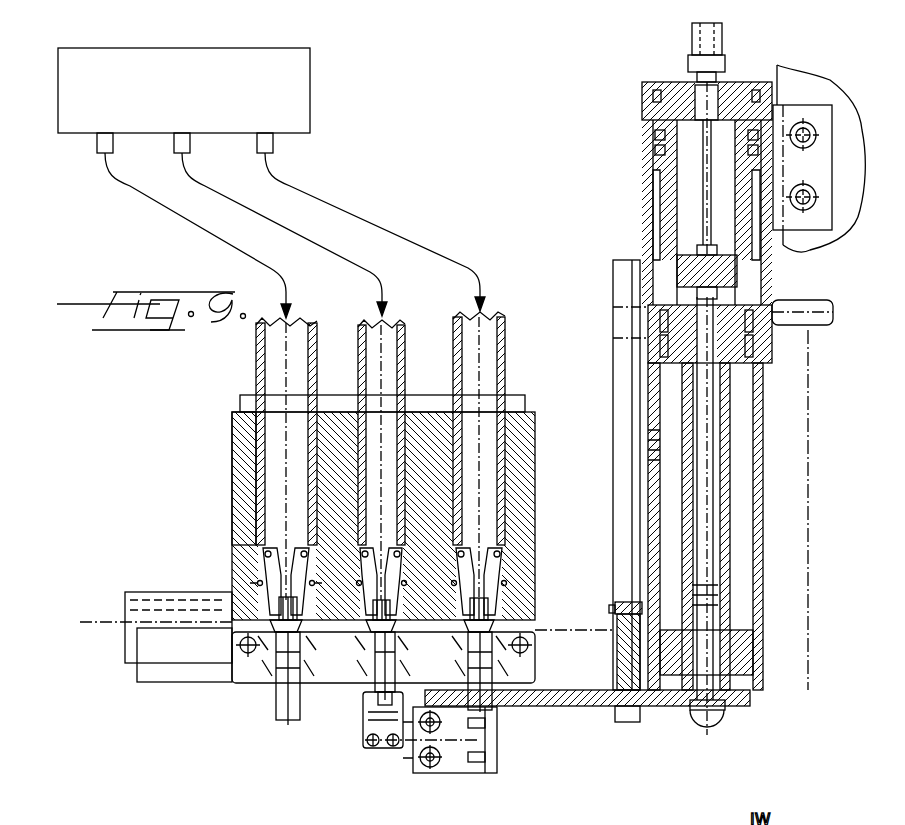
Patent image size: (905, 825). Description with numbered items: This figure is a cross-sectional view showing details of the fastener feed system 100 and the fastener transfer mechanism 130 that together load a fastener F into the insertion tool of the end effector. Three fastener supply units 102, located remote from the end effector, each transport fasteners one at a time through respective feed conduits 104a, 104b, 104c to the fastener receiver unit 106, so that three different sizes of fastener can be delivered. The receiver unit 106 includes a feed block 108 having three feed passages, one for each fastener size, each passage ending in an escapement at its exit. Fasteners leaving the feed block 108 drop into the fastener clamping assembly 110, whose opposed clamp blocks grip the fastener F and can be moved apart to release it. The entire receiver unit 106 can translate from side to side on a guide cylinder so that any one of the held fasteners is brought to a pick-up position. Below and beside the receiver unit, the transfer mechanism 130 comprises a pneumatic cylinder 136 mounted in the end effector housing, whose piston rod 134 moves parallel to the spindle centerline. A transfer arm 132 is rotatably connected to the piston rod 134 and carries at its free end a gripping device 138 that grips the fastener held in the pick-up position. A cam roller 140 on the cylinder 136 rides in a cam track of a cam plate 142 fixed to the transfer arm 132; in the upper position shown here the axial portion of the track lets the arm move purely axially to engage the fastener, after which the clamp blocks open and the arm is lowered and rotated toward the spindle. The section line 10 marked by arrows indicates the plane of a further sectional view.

The fastener feed system 100 is at (452, 112).
The fastener supply unit 102 is at (300, 80).
The feed conduit 104a is at (255, 368).
The feed conduit 104b is at (348, 340).
The feed conduit 104c is at (505, 350).
The fastener receiver unit 106 is at (228, 438).
The feed block 108 is at (232, 470).
The fastener clamping assembly 110 is at (185, 682).
The section line 10 is at (95, 636).
The OSI fastener F is at (272, 710).
The fastener transfer mechanism 130 is at (612, 212).
The transfer arm 132 is at (563, 707).
The piston rod 134 is at (720, 497).
The pneumatic cylinder 136 is at (645, 475).
The gripping device 138 is at (358, 738).
The cam roller 140 is at (627, 600).
The cam plate 142 is at (622, 511).